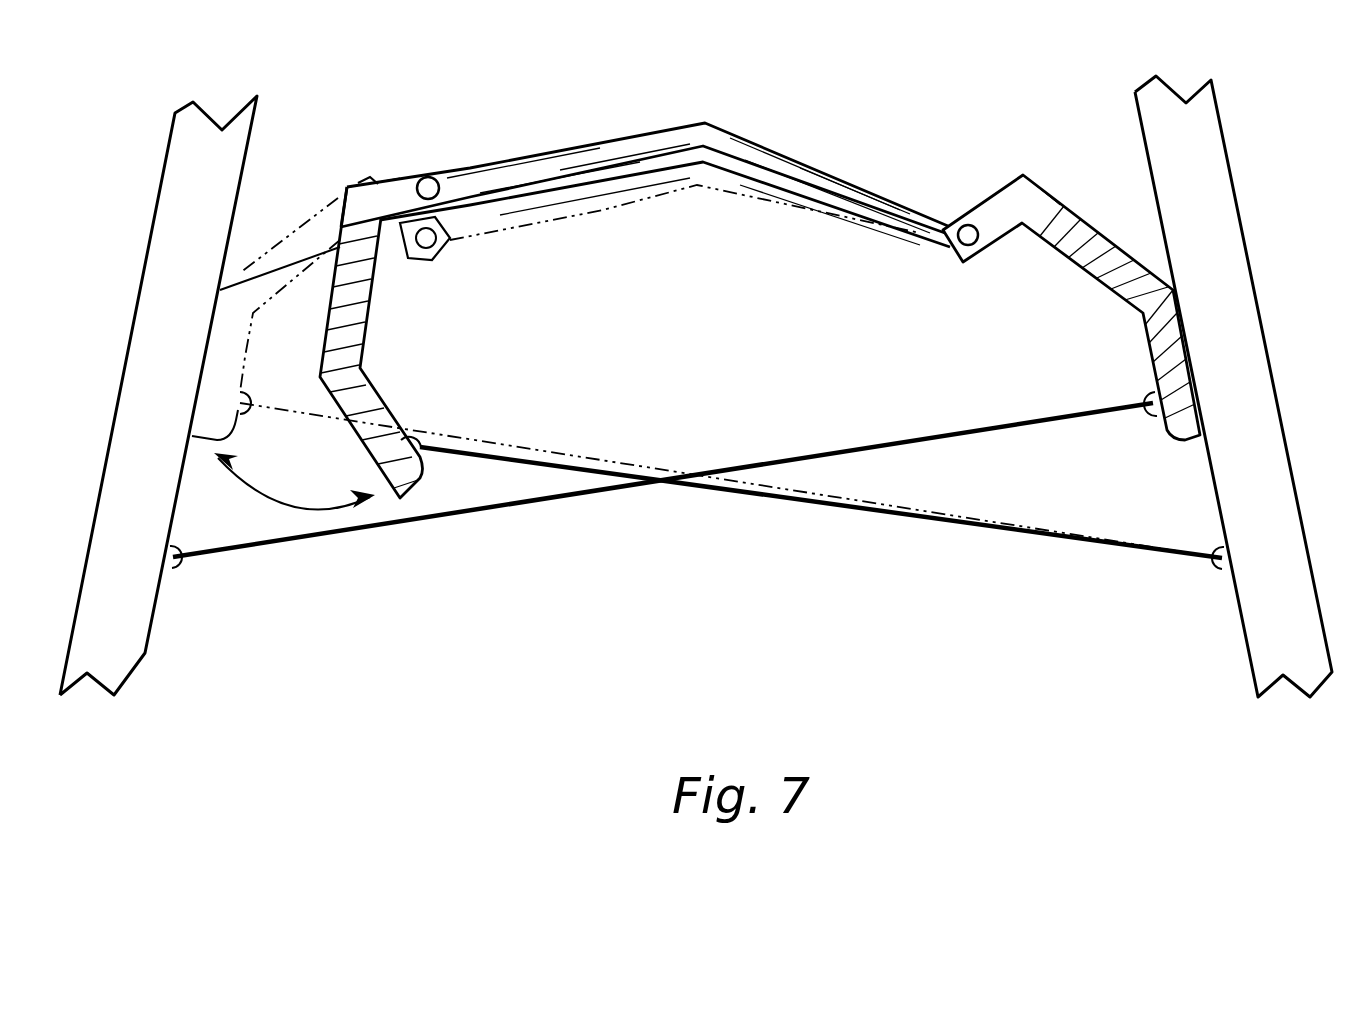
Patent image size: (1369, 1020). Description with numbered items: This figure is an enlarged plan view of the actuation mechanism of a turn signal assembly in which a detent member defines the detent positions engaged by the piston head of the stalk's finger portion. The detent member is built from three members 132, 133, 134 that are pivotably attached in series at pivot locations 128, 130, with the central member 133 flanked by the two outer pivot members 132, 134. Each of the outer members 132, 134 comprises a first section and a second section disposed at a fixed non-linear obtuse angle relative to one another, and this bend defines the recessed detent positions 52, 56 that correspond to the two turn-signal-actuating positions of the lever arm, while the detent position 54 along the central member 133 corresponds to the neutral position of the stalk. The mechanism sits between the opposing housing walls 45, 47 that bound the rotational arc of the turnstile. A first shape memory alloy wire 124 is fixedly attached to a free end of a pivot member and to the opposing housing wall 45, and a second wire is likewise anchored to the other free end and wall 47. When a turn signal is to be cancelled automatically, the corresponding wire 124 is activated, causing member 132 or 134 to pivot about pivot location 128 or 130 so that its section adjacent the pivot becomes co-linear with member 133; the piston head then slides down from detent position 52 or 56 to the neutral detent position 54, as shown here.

The housing wall 45 is at (1228, 197).
The housing wall 47 is at (168, 191).
The detent position 52 is at (382, 220).
The detent position 54 is at (703, 164).
The detent position 56 is at (1022, 226).
The first shape memory alloy wire 124 is at (510, 440).
The pivot location 128 is at (968, 224).
The pivot location 130 is at (428, 185).
The pivot member 132 is at (397, 173).
The detent member 133 is at (648, 130).
The pivot member 134 is at (1040, 180).